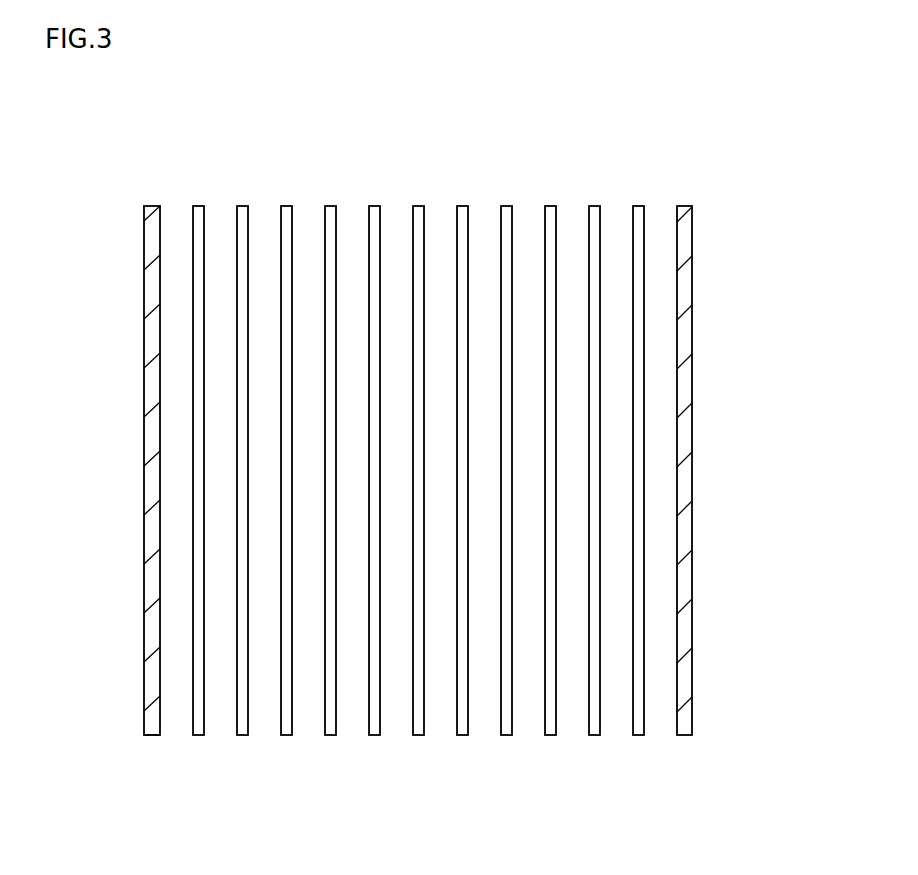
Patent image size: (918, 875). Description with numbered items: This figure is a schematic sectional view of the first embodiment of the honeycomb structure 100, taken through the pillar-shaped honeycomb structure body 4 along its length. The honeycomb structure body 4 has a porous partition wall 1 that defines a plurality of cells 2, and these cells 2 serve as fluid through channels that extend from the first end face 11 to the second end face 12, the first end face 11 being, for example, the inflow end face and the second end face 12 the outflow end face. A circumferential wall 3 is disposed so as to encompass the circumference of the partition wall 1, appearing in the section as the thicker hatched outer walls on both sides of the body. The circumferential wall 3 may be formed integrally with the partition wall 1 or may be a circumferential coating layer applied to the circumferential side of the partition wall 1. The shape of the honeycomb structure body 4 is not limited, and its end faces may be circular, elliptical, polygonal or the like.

The honeycomb structure 100 is at (773, 79).
The partition wall 1 is at (548, 226).
The cells 2 is at (477, 272).
The circumferential wall 3 is at (157, 362).
The honeycomb structure body 4 is at (697, 216).
The first end face 11 is at (168, 190).
The second end face 12 is at (182, 749).